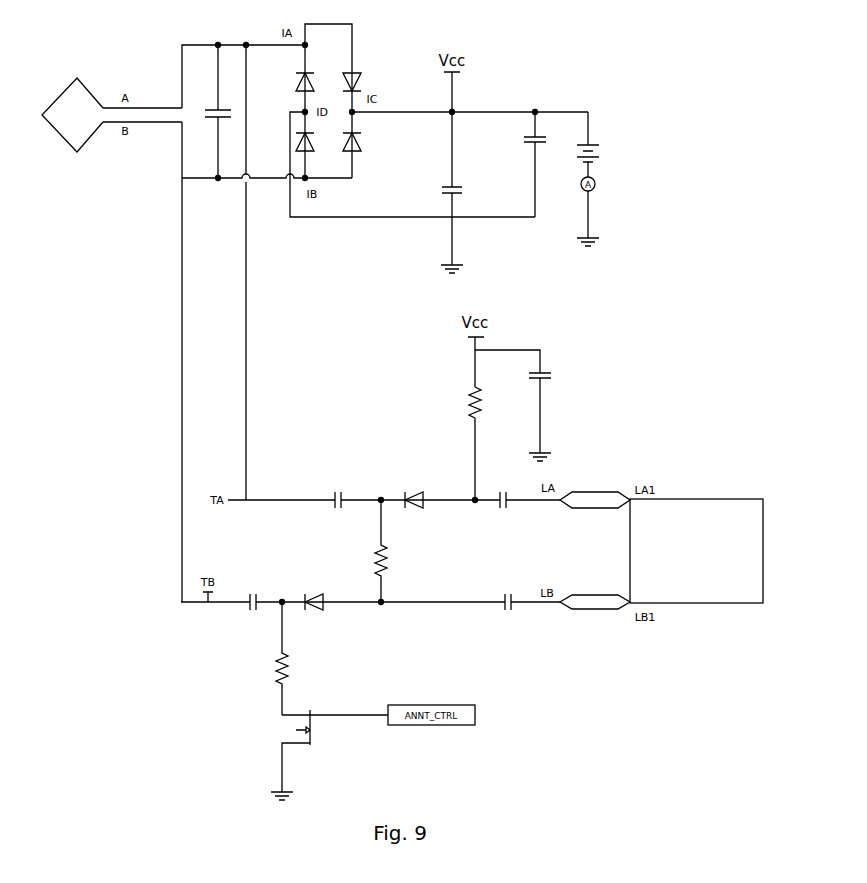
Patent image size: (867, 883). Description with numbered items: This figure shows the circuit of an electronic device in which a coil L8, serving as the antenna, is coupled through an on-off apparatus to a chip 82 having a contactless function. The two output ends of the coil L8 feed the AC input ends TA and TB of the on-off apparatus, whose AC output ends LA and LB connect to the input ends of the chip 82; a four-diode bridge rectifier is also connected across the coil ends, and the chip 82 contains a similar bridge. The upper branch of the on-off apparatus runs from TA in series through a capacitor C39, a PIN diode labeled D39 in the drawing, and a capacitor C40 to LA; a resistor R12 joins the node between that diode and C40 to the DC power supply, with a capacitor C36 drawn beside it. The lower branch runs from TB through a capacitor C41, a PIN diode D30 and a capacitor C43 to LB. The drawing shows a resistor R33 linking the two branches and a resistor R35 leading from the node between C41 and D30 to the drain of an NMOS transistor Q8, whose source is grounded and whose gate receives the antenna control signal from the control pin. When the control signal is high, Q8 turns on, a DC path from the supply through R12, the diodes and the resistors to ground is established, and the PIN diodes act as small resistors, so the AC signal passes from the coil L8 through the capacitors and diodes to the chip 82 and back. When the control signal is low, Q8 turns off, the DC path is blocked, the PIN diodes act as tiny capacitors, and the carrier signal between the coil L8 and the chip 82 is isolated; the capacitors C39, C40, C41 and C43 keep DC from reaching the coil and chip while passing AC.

The chip having the contactless function 82 is at (696, 552).
The coil L8 is at (72, 115).
The resistor R12 is at (457, 402).
The capacitor C36 is at (555, 378).
The capacitor C39 is at (338, 488).
The diode D39 is at (416, 488).
The capacitor C40 is at (503, 509).
The resistor R33 is at (399, 551).
The capacitor C41 is at (253, 591).
The PIN diode D30 is at (314, 591).
The capacitor C43 is at (508, 591).
The resistor R35 is at (299, 658).
The NMOS transistor Q8 is at (318, 751).